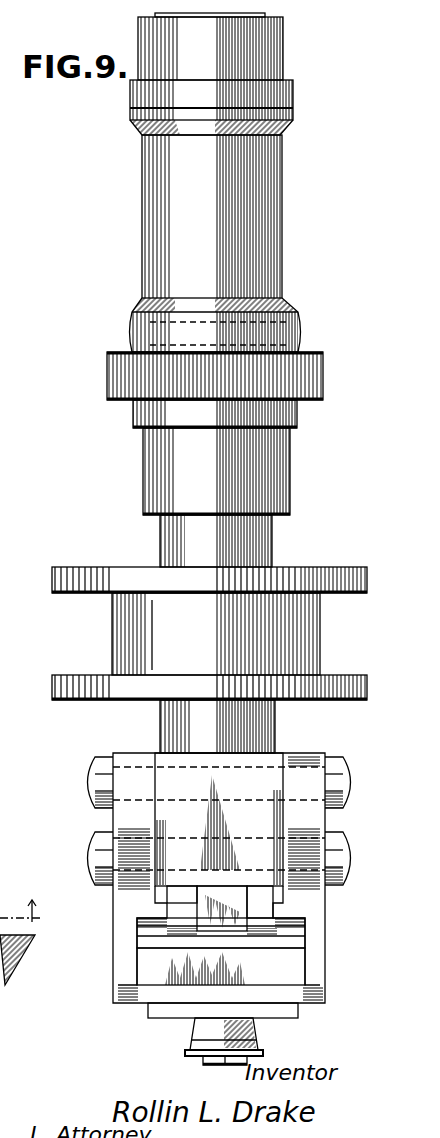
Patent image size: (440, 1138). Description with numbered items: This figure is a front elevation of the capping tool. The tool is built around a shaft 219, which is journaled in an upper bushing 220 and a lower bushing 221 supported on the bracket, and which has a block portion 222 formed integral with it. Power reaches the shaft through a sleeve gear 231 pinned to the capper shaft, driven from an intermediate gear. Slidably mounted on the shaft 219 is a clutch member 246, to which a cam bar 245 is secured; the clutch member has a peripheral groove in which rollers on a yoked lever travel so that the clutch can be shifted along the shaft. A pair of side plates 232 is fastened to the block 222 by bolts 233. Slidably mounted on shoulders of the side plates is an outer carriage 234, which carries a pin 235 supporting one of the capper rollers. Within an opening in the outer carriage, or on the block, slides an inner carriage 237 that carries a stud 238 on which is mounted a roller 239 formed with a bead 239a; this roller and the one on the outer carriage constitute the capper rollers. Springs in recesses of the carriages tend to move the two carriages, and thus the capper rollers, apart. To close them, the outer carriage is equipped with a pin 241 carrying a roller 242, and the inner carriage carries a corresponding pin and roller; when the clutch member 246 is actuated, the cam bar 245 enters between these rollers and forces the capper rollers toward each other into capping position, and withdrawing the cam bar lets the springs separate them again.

The bushing 220 is at (262, 57).
The sleeve gear 231 is at (262, 212).
The bushing 221 is at (265, 467).
The shaft 219 is at (250, 546).
The clutch member 246 is at (80, 590).
The cam bar 245 is at (235, 726).
The block portion 222 is at (160, 758).
The side plates 232 is at (310, 757).
The bolts 233 is at (333, 840).
The roller 242 is at (218, 932).
The inner carriage 237 is at (260, 912).
The pin 241 is at (262, 940).
The carriage 234 is at (283, 968).
The roller 239 is at (255, 1028).
The bead 239a is at (265, 1053).
The stud 238 is at (215, 1056).
The pin 235 is at (21, 965).